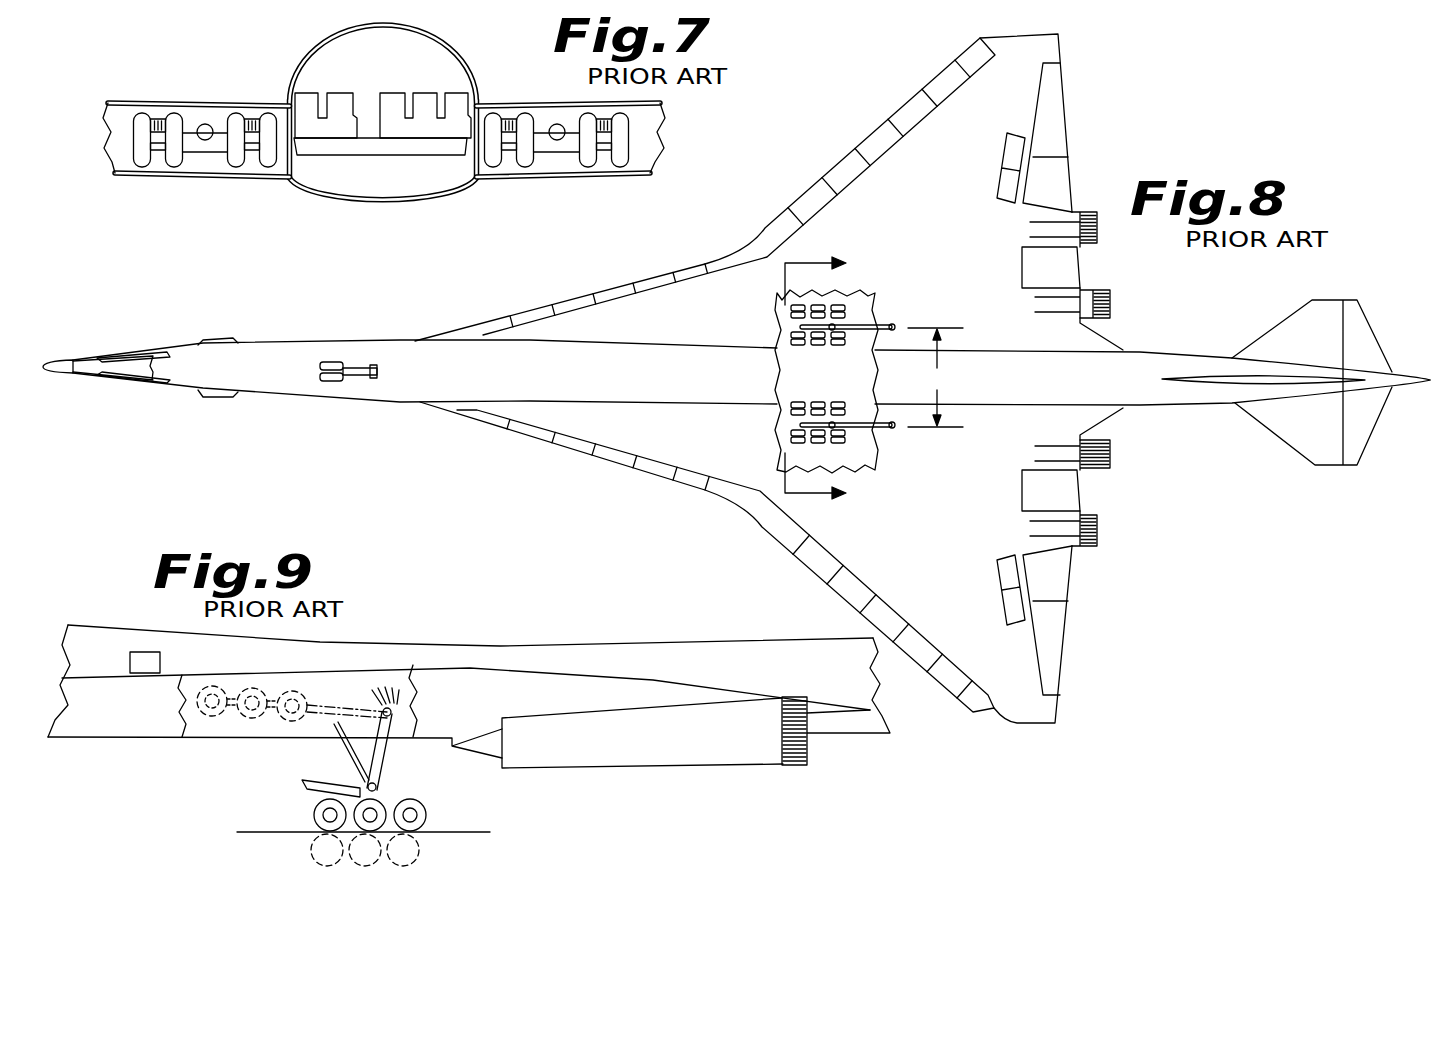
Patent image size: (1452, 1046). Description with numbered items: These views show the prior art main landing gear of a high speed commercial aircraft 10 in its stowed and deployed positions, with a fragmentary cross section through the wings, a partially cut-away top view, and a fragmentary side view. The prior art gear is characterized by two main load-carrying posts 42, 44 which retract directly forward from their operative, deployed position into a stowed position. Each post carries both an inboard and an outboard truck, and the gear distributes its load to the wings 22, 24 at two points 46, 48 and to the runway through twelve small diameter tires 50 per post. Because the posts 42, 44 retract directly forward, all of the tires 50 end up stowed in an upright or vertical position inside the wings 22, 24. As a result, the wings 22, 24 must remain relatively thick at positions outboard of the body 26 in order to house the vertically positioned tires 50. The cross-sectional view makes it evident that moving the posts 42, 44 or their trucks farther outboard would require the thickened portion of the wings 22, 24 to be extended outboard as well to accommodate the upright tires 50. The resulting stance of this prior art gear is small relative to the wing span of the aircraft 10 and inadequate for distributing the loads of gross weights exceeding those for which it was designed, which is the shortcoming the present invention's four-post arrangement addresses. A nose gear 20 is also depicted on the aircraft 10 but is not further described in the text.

In FIG. 8, the aircraft 10 is at (452, 442).
In FIG. 8, the nose landing gear 20 is at (357, 363).
In FIG. 7, the wing 22 is at (104, 117).
In FIG. 8, the wing 22 is at (1020, 102).
In FIG. 7, the wing 24 is at (668, 121).
In FIG. 8, the wing 24 is at (1025, 674).
In FIG. 9, the wing 24 is at (465, 690).
In FIG. 7, the body 26 is at (457, 54).
In FIG. 8, the body 26 is at (492, 362).
In FIG. 9, the body 26 is at (625, 662).
In FIG. 7, the main load-carrying post 42 is at (208, 118).
In FIG. 8, the main load-carrying post 42 is at (873, 297).
In FIG. 7, the main load-carrying post 44 is at (560, 118).
In FIG. 8, the main load-carrying post 44 is at (873, 458).
In FIG. 9, the main load-carrying post 44 is at (382, 763).
In FIG. 8, the load distribution point 46 is at (895, 325).
In FIG. 8, the load distribution point 48 is at (863, 436).
In FIG. 9, the load distribution point 48 is at (390, 700).
In FIG. 7, the tires 50 is at (174, 168).